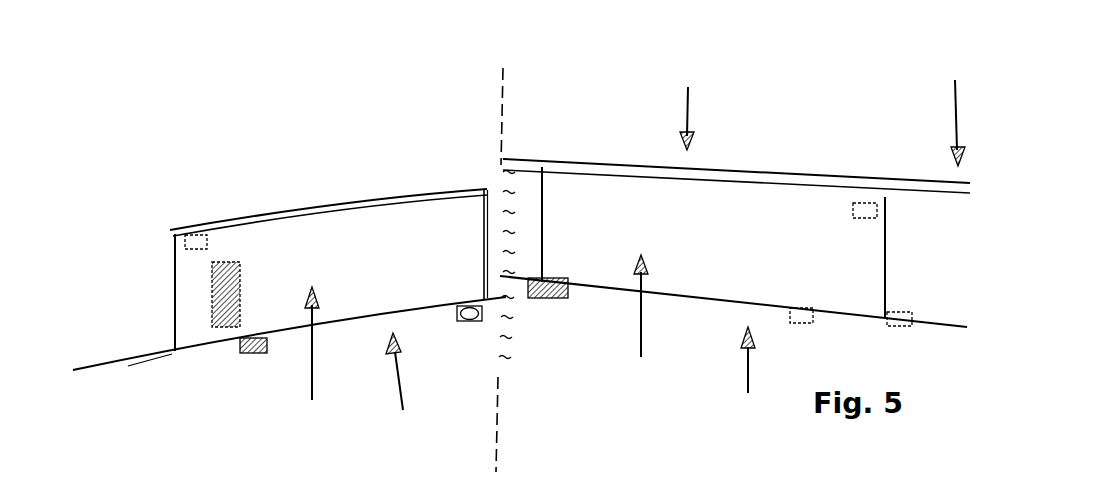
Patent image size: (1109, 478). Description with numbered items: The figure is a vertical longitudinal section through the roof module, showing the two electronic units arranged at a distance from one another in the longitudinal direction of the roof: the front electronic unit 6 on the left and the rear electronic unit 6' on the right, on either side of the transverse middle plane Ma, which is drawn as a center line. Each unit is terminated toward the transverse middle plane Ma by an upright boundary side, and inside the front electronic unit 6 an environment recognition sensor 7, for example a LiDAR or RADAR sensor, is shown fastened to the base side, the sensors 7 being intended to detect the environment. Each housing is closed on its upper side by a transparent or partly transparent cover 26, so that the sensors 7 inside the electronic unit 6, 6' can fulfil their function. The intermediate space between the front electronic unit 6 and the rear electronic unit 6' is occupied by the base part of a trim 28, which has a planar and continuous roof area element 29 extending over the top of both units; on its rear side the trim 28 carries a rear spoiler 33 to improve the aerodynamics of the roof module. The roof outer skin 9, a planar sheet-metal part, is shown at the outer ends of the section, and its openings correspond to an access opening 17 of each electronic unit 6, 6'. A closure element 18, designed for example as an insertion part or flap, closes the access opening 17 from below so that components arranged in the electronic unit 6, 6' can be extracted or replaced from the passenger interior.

The front electronic unit 6 is at (308, 366).
The rear electronic unit 6' is at (635, 328).
The environment recognition sensor 7 is at (230, 272).
The roof outer skin 9 is at (87, 366).
The access opening 17 is at (579, 396).
The closure element 18 is at (357, 318).
The cover 26 is at (175, 282).
The trim 28 is at (696, 99).
The roof area element 29 is at (307, 205).
The rear spoiler 33 is at (961, 102).
The transverse middle plane Ma is at (503, 78).